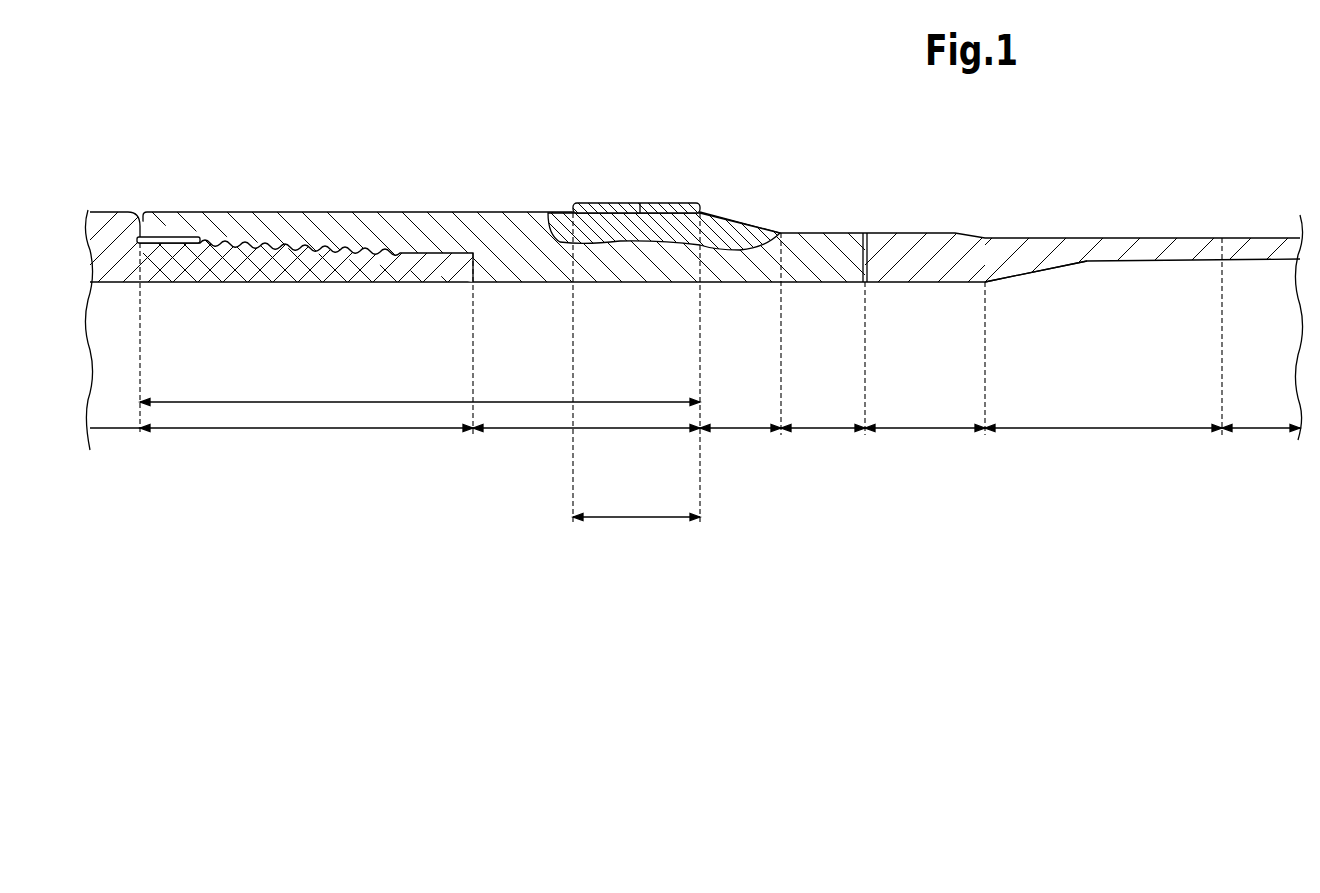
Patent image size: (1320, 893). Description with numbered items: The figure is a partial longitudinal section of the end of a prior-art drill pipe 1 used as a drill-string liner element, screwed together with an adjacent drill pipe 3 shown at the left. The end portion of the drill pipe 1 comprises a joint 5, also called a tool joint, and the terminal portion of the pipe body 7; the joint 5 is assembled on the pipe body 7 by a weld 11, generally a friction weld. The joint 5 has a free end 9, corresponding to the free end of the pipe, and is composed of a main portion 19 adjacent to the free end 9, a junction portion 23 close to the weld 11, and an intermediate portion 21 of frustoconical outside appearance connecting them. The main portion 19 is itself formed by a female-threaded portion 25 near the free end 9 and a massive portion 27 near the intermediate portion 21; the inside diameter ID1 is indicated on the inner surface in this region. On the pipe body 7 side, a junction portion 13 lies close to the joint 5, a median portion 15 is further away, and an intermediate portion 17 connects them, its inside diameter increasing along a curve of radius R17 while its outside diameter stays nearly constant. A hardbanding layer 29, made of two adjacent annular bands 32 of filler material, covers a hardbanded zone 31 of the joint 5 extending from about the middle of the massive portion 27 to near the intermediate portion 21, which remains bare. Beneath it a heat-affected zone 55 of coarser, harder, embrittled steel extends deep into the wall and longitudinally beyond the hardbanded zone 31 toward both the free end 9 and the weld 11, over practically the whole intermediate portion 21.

The drill pipe 1 is at (1245, 207).
The adjacent drill pipe 3 is at (107, 192).
The joint 5 is at (356, 212).
The pipe body 7 is at (1120, 236).
The free end 9 is at (141, 233).
The weld 11 is at (865, 285).
The junction portion 13 is at (928, 432).
The median portion 15 is at (1265, 432).
The intermediate portion 17 is at (1118, 432).
The main portion 19 is at (362, 402).
The intermediate portion 21 is at (737, 432).
The junction portion 23 is at (820, 432).
The female-threaded portion 25 is at (308, 432).
The massive portion 27 is at (600, 432).
The hardbanding layer 29 is at (675, 203).
The hardbanded zone 31 is at (632, 520).
The band 32 is at (660, 203).
The heat-affected zone 55 is at (728, 232).
The inner diameter ID1 is at (493, 284).
The radius of the curve R17 is at (1096, 268).